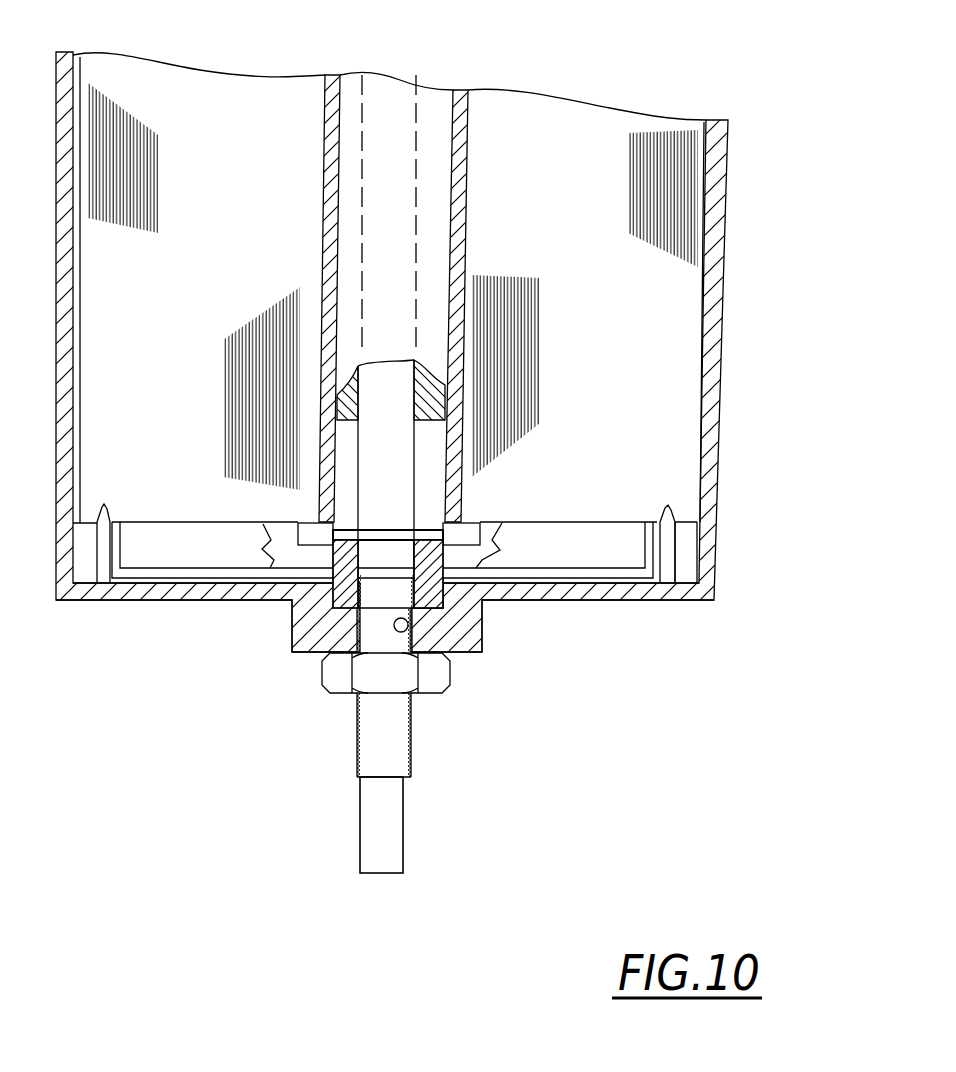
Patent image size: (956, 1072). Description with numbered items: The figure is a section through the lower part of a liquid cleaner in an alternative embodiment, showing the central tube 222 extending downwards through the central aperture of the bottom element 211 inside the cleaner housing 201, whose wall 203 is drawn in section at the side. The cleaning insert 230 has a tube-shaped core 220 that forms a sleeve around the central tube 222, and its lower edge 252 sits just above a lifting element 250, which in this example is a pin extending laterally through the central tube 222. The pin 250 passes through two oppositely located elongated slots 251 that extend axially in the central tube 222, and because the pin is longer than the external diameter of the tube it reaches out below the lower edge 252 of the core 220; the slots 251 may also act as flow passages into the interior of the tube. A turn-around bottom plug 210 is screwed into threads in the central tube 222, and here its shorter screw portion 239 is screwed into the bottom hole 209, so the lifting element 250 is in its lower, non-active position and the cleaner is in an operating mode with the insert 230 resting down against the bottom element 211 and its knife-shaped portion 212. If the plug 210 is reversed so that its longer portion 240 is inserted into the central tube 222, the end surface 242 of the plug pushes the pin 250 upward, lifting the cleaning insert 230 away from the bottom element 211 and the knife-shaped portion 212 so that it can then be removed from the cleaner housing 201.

The cleaner housing 201 is at (731, 234).
The container wall liner 203 is at (715, 291).
The cleaning insert 230 is at (640, 372).
The tube-shaped core 220 is at (458, 172).
The elongated slots 251 is at (430, 487).
The lower edge 252 is at (452, 527).
The lifting element 250 is at (315, 532).
The bottom element 211 is at (626, 564).
The knife-shaped portion 212 is at (670, 520).
The central tube 222 is at (333, 583).
The shorter screw portion 239 is at (372, 632).
The bottom hole 209 is at (408, 632).
The bottom plug 210 is at (433, 678).
The longer portion 240 is at (388, 823).
The end surface 242 is at (380, 873).